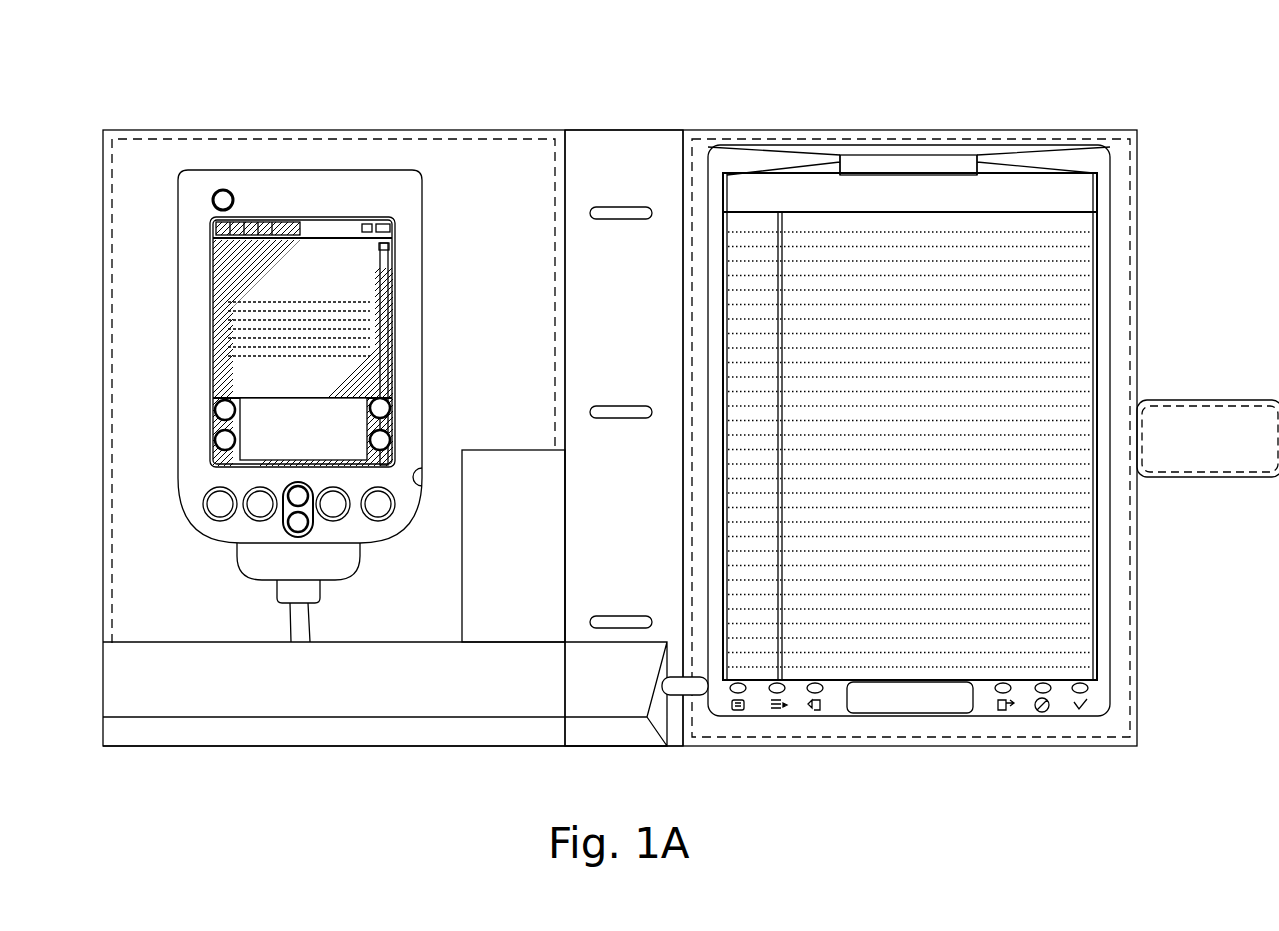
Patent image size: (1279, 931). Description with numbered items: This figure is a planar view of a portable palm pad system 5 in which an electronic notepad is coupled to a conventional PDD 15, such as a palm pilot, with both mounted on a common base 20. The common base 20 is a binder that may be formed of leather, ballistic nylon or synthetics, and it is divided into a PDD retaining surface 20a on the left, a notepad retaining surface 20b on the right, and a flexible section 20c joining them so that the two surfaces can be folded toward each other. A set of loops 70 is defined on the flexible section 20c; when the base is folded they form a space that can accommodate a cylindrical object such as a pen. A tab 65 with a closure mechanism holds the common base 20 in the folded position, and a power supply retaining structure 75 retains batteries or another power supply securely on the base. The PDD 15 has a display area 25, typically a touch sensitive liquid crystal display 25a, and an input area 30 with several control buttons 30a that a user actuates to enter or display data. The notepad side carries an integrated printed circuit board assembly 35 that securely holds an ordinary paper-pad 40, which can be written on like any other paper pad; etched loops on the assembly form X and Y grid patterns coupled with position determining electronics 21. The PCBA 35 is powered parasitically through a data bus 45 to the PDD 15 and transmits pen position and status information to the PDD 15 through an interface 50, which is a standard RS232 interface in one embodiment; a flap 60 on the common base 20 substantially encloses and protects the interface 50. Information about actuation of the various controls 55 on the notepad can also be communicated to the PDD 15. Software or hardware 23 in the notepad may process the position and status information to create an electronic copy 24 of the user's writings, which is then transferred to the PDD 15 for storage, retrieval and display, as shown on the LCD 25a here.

The portable palm pad system 5 is at (1007, 108).
The PDD 15 is at (400, 163).
The common base 20 is at (500, 750).
The PDD retaining surface 20a is at (492, 158).
The notepad retaining surface 20b is at (762, 137).
The flexible section 20c is at (613, 152).
The position determining electronics 21 is at (1095, 726).
The software or hardware 23 is at (758, 726).
The electronic copy 24 is at (232, 330).
The display area 25 is at (322, 218).
The touch sensitive liquid crystal display 25a is at (333, 274).
The input area 30 is at (196, 468).
The control buttons 30a is at (380, 505).
The integrated printed circuit board assembly 35 is at (1097, 220).
The paper-pad 40 is at (1070, 565).
The data bus 45 is at (693, 698).
The interface 50 is at (248, 565).
The controls 55 is at (1002, 712).
The flap 60 is at (406, 696).
The tab 65 is at (1242, 446).
The loops 70 is at (637, 215).
The power supply retaining structure 75 is at (533, 548).